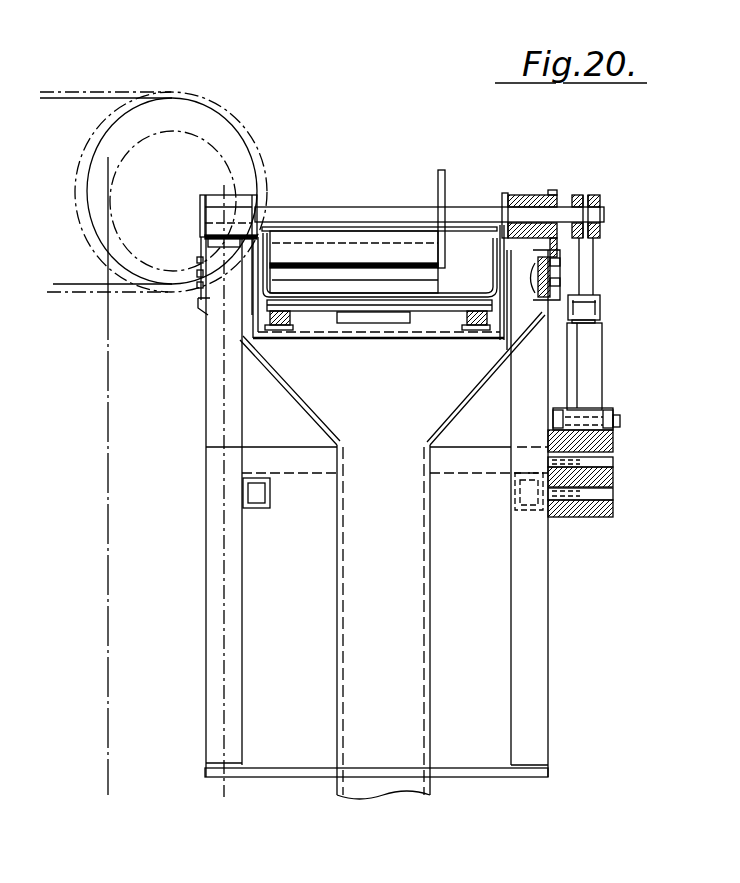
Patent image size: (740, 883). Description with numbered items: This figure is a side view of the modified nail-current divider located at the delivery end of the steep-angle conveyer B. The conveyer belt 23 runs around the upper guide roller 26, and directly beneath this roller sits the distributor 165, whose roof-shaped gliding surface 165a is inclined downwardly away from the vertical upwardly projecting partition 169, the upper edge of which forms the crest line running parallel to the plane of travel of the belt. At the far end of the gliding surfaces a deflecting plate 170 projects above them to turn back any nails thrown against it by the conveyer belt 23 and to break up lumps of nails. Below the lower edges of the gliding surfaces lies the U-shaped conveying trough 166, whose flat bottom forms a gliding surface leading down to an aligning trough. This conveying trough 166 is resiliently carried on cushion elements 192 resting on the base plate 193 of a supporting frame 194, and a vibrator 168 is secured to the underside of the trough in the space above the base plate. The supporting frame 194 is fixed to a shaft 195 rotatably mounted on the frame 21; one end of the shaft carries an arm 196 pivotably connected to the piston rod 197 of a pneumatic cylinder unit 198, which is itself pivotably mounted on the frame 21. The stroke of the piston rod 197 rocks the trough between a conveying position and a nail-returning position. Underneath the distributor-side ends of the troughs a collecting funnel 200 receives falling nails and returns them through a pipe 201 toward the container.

The steep-angle conveyer B is at (156, 65).
The conveyer belt 23 is at (103, 92).
The upper guide roller 26 is at (93, 147).
The frame 21 is at (218, 647).
The pipe 201 is at (358, 658).
The collecting funnel 200 is at (412, 420).
The base plate 193 is at (382, 338).
The shaft 195 is at (340, 213).
The partition 169 is at (302, 228).
The distributor 165 is at (450, 235).
The gliding surface 165a is at (372, 255).
The deflecting plate 170 is at (440, 178).
The conveying trough 166 is at (460, 294).
The cushion element 192 is at (270, 322).
The vibrator 168 is at (353, 316).
The supporting frame 194 is at (503, 257).
The arm 196 is at (595, 193).
The piston rod 197 is at (593, 258).
The pneumatic cylinder unit 198 is at (593, 350).